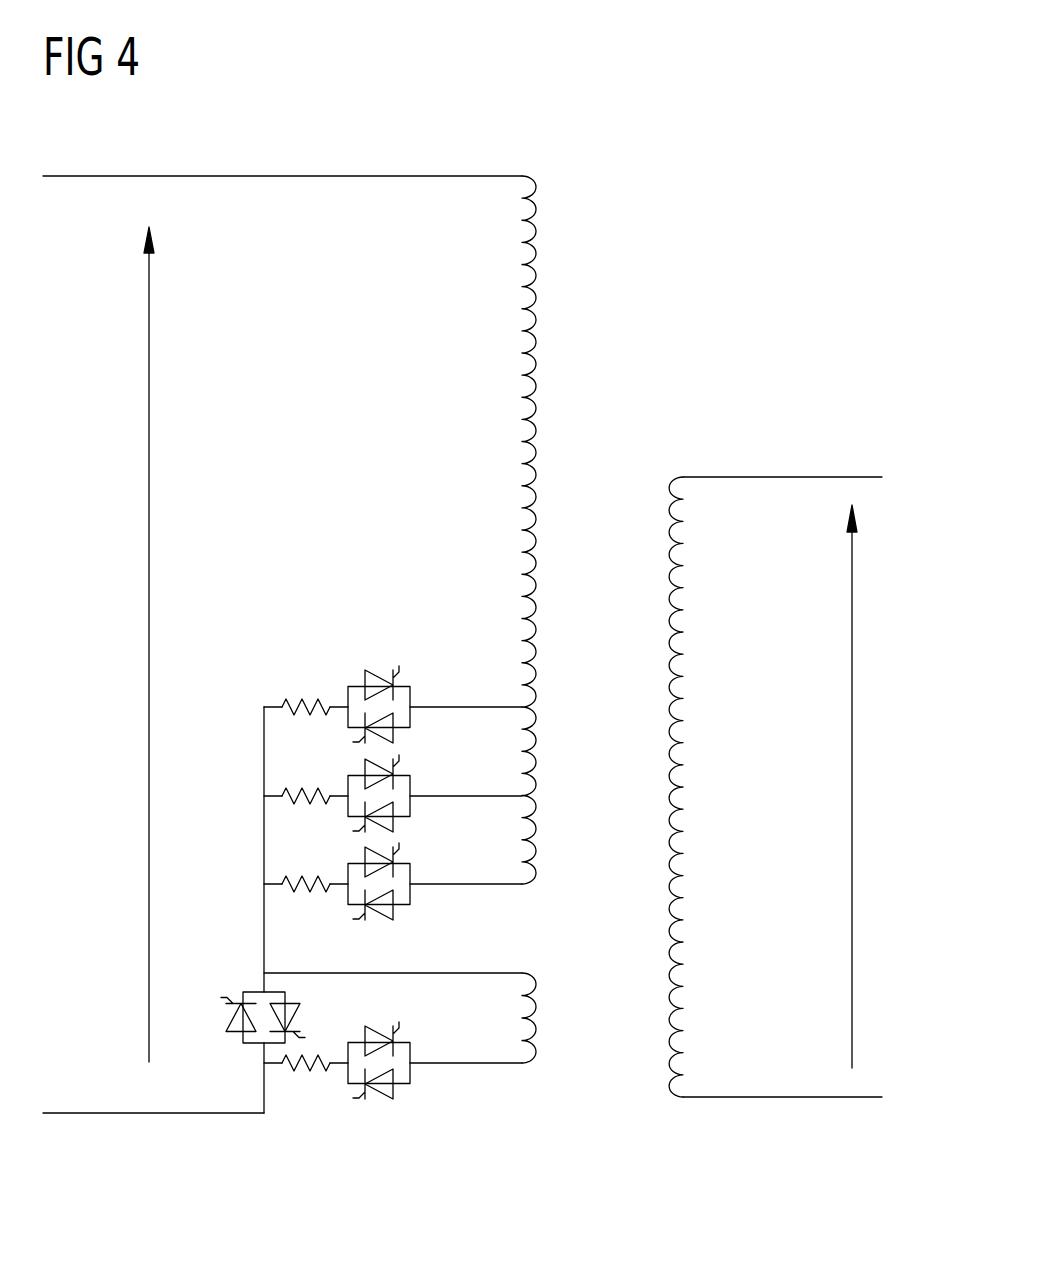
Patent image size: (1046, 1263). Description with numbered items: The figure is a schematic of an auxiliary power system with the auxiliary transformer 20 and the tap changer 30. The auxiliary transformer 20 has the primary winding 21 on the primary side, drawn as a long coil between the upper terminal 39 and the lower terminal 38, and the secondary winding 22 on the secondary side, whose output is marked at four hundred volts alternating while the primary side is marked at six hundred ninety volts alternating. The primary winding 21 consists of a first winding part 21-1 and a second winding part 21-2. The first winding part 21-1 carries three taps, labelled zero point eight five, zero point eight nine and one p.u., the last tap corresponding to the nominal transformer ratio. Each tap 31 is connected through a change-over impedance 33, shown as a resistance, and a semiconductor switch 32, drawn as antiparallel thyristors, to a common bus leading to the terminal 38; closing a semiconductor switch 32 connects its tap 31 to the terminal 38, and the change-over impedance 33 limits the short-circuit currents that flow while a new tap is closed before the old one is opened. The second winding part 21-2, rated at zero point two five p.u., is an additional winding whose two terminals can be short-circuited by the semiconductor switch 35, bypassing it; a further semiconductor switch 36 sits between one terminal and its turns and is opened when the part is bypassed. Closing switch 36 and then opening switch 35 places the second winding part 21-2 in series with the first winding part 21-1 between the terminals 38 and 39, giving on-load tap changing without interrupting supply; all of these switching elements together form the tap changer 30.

The auxiliary transformer 20 is at (746, 187).
The primary winding 21 is at (543, 166).
The first winding part 21-1 is at (536, 297).
The second winding part 21-2 is at (536, 1051).
The secondary winding 22 is at (670, 533).
The tap changer 30 is at (530, 1141).
The tap 31 is at (458, 706).
The semiconductor switch 32 is at (375, 656).
The change-over impedance 33 is at (303, 672).
The semiconductor switch 35 is at (250, 981).
The further semiconductor switch 36 is at (428, 1081).
The terminal 38 is at (91, 1112).
The terminal 39 is at (91, 176).